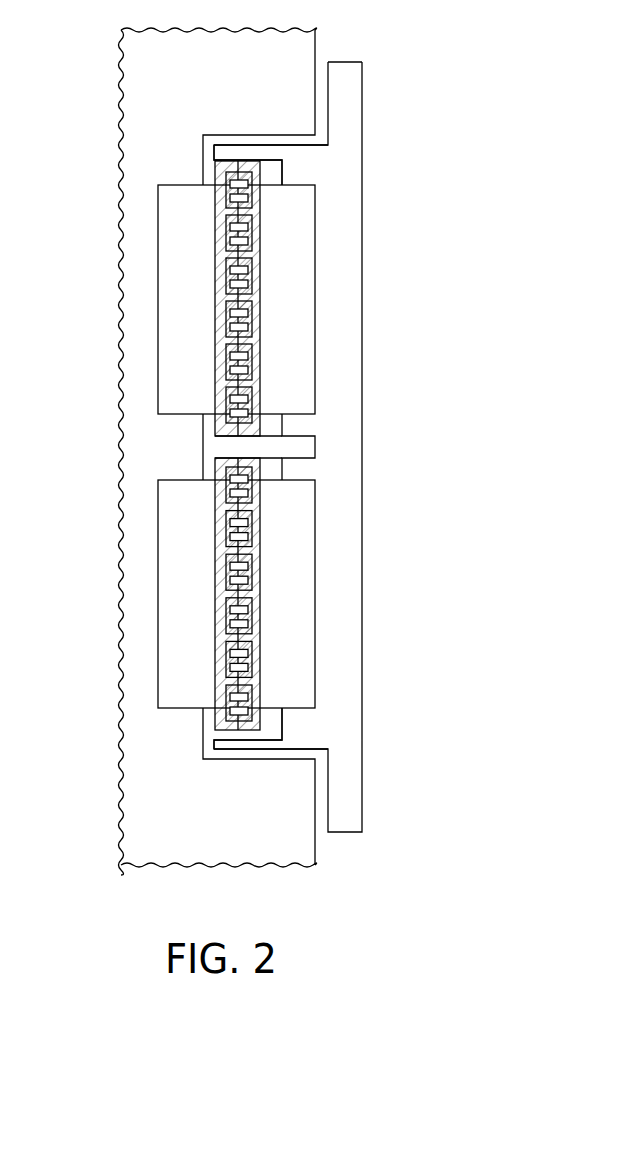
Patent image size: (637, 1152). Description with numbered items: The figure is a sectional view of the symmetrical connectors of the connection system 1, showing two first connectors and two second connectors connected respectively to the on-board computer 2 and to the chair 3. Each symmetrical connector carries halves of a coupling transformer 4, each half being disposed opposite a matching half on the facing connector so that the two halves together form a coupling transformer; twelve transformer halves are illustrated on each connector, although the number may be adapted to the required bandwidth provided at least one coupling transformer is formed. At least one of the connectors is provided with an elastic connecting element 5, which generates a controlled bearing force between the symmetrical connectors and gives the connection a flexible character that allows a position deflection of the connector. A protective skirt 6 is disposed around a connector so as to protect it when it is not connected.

The connection system 1 is at (283, 447).
The on-board computer 2 is at (110, 68).
The chair 3 is at (370, 134).
The coupling transformer half 4 is at (228, 657).
The elastic connecting element 5 is at (272, 177).
The protective skirt 6 is at (253, 746).